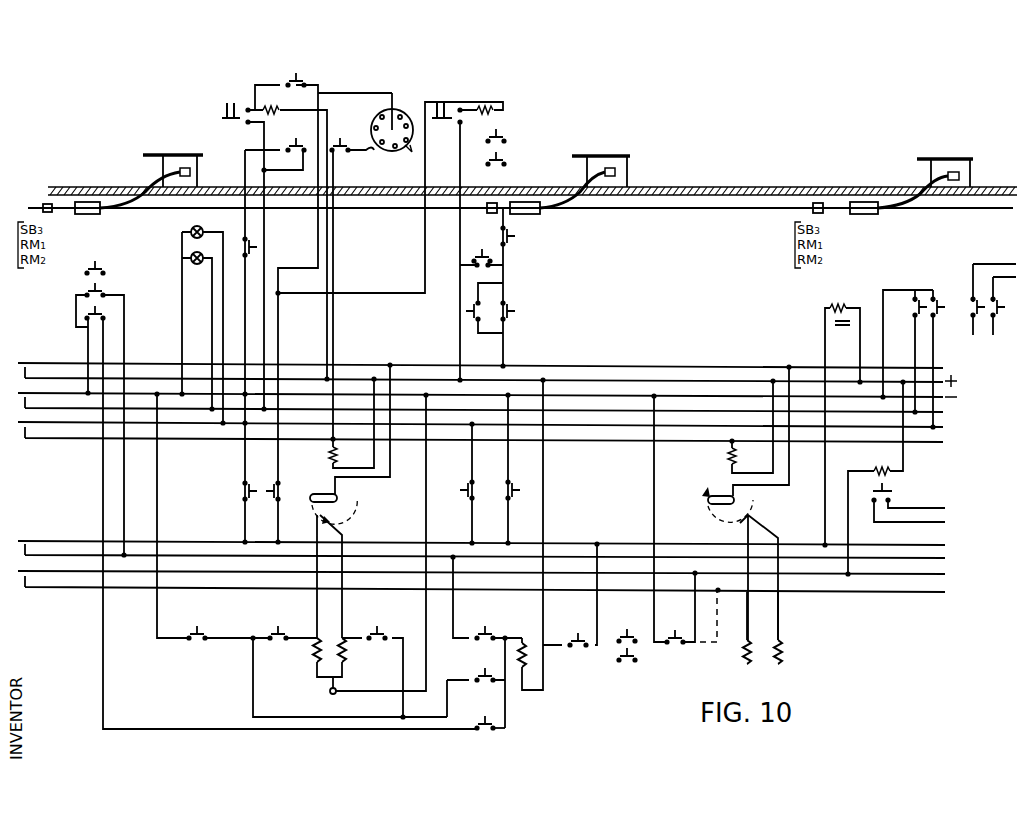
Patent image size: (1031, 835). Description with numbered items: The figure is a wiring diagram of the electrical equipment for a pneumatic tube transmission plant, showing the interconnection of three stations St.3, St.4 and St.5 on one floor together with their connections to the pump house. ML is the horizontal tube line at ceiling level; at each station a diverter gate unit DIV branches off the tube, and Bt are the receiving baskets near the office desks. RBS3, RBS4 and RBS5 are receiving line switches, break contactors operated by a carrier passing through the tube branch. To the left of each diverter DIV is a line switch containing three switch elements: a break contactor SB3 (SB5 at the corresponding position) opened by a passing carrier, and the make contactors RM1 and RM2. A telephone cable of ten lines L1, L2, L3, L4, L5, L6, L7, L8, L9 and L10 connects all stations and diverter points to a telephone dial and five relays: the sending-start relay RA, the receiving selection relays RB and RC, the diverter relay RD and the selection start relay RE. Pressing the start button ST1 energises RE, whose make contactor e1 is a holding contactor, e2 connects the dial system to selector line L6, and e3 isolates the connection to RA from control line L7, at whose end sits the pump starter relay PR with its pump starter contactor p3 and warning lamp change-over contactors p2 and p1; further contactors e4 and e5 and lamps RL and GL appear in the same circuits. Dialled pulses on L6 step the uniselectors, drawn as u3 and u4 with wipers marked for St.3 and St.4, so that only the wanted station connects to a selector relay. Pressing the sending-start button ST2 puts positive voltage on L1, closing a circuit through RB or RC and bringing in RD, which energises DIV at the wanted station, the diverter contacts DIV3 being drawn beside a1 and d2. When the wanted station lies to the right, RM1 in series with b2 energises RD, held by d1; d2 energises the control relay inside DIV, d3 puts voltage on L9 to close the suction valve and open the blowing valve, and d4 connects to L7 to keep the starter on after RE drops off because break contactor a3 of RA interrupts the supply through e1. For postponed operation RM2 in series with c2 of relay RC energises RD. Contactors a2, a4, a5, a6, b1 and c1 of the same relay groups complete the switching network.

The horizontal tube line ML is at (688, 208).
The diverter gate unit DIV is at (460, 217).
The diverter unit of station St.3 DIV3 is at (576, 417).
The station St.3 is at (173, 148).
The station St.4 is at (601, 149).
The station St.5 is at (945, 151).
The receiving line switch RBS3 is at (185, 168).
The receiving line switch RBS4 is at (612, 168).
The receiving line switch RBS5 is at (957, 172).
The receiving basket Bt is at (197, 181).
The start button ST1 is at (232, 108).
The sending-start button ST2 is at (443, 227).
The selection start relay RE is at (287, 242).
The sending relay RA is at (389, 199).
The holding contactor e1 is at (323, 302).
The dial connecting contactor e2 is at (351, 282).
The isolating contactor e3 is at (270, 492).
The contact e4 is at (231, 490).
The contact e5 is at (276, 332).
The contact a1 is at (500, 138).
The contact a2 is at (474, 258).
The break contactor a3 is at (250, 247).
The contact a4 is at (517, 469).
The contact a5 is at (458, 483).
The contact a6 is at (470, 311).
The break contactor SB3 is at (104, 260).
The break contactor SB5 is at (500, 236).
The make contactor RM1 is at (106, 292).
The make contactor RM2 is at (86, 318).
The red lamp RL is at (202, 318).
The green lamp GL is at (197, 330).
The cable line L1 is at (473, 359).
The cable line L2 is at (484, 373).
The cable line L3 is at (473, 388).
The cable line L4 is at (484, 403).
The cable line L5 is at (473, 418).
The selector line L6 is at (484, 433).
The control line L7 is at (474, 536).
The cable line L8 is at (485, 550).
The control line L9 is at (474, 566).
The cable line L10 is at (485, 583).
The relay u3 is at (346, 501).
The relay u4 is at (741, 503).
The pump starter relay PR is at (897, 432).
The warning lamp change-over contactor p1 is at (943, 358).
The warning lamp change-over contactor p2 is at (908, 351).
The pump starter control contactor p3 is at (993, 312).
The contact b1 is at (302, 557).
The relay contactor b2 is at (487, 642).
The contact c1 is at (372, 666).
The relay contactor c2 is at (489, 717).
The holding contactor d1 is at (476, 686).
The relay contactor d2 is at (626, 639).
The relay contactor d3 is at (685, 520).
The relay contactor d4 is at (570, 596).
The receiving selection relay RB is at (523, 640).
The receiving selection relay RC is at (566, 544).
The diverter relay RD is at (528, 655).